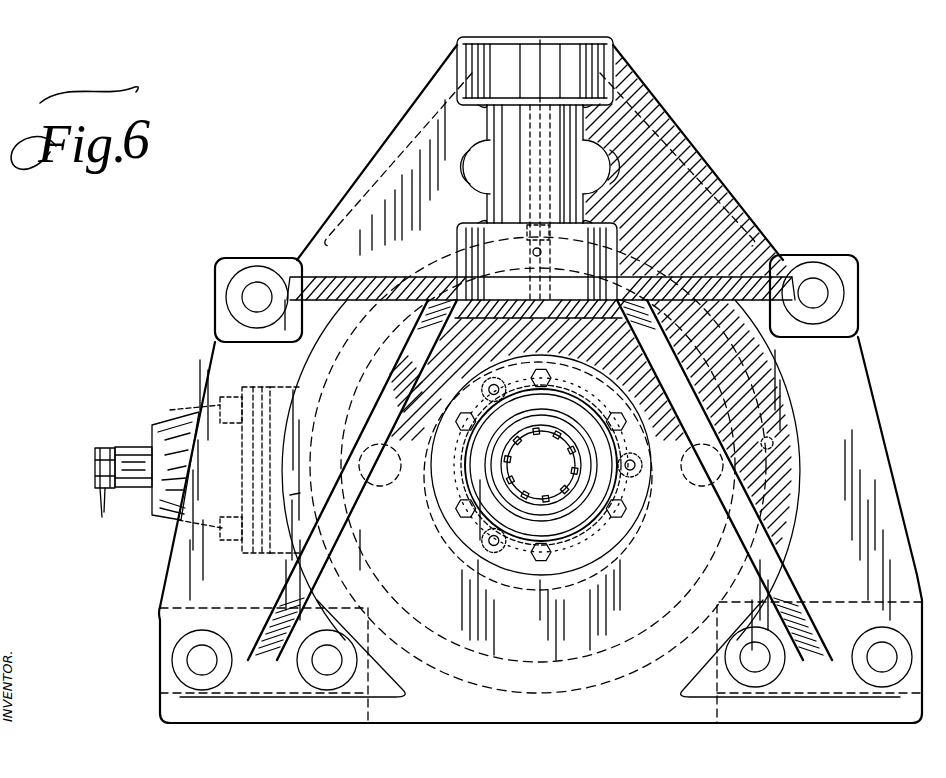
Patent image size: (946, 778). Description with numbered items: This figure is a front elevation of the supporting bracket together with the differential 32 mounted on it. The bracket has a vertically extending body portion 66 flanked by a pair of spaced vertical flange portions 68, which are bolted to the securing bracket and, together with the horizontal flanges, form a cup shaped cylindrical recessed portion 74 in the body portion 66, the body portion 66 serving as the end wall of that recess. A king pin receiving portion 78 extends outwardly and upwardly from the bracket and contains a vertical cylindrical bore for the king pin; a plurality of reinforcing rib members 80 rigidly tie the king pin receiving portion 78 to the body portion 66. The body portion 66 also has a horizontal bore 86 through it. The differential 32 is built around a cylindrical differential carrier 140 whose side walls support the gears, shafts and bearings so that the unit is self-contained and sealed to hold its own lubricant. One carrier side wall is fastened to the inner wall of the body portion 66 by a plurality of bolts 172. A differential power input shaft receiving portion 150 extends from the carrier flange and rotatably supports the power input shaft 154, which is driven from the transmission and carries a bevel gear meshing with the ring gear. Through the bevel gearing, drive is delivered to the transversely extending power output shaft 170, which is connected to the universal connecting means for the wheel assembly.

The differential 32 is at (170, 408).
The supporting bracket body portion 66 is at (550, 333).
The vertical flange portions 68 is at (212, 356).
The recessed portion 74 is at (773, 447).
The king pin receiving portion 78 is at (458, 55).
The reinforcing rib members 80 is at (355, 282).
The horizontal bore 86 is at (568, 406).
The differential carrier 140 is at (298, 493).
The differential power input shaft receiving portion 150 is at (152, 510).
The power input shaft 154 is at (128, 447).
The power output shaft 170 is at (556, 476).
The bolts 172 is at (627, 505).